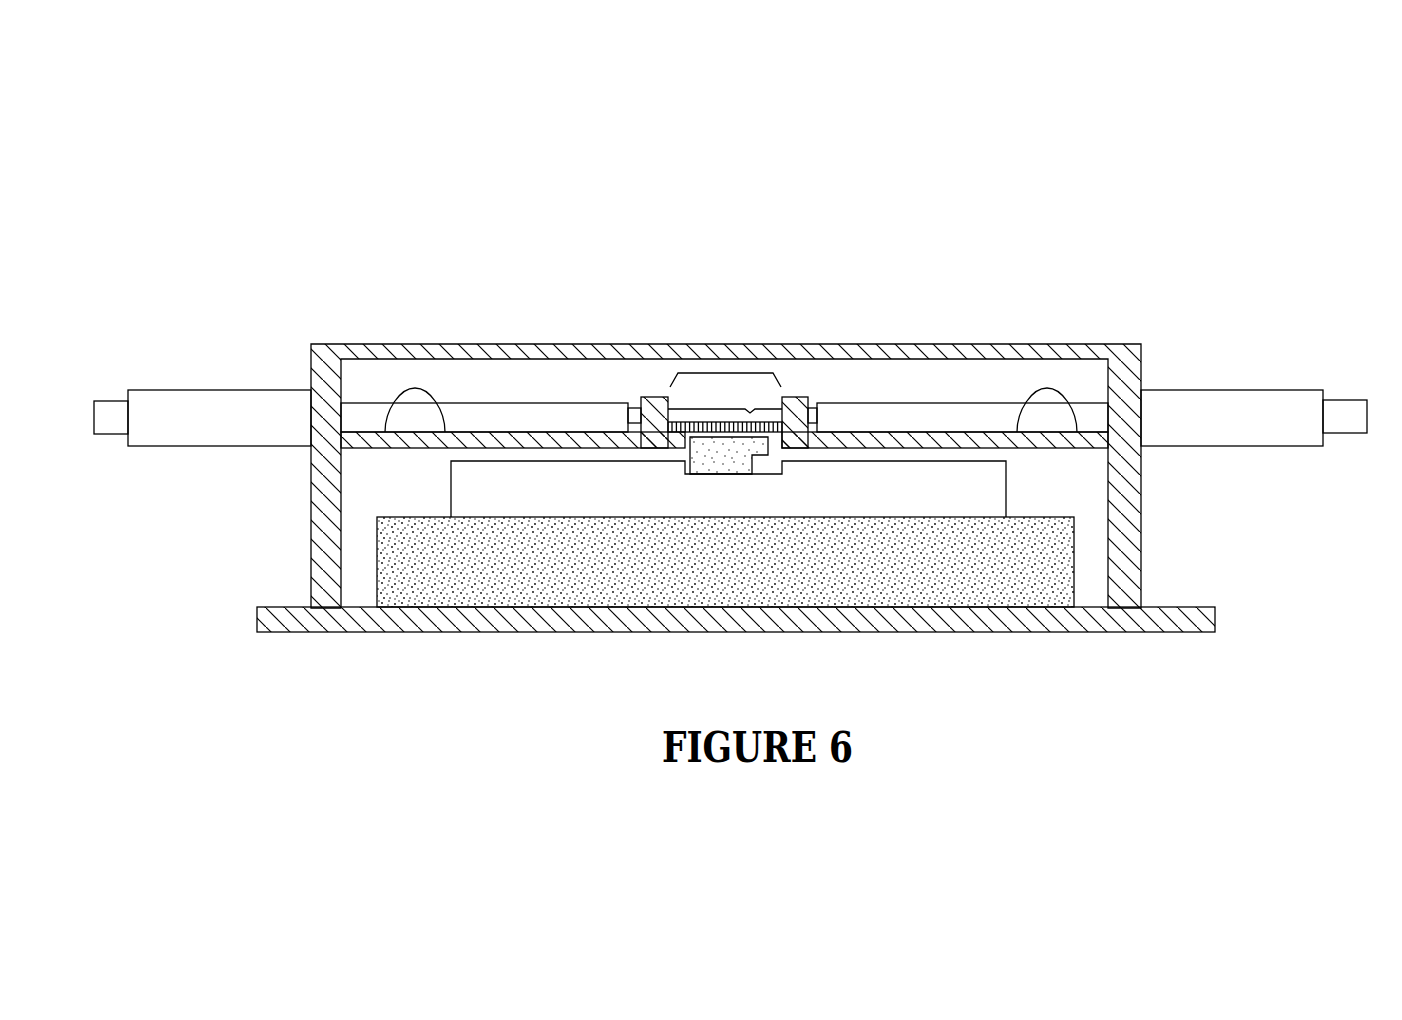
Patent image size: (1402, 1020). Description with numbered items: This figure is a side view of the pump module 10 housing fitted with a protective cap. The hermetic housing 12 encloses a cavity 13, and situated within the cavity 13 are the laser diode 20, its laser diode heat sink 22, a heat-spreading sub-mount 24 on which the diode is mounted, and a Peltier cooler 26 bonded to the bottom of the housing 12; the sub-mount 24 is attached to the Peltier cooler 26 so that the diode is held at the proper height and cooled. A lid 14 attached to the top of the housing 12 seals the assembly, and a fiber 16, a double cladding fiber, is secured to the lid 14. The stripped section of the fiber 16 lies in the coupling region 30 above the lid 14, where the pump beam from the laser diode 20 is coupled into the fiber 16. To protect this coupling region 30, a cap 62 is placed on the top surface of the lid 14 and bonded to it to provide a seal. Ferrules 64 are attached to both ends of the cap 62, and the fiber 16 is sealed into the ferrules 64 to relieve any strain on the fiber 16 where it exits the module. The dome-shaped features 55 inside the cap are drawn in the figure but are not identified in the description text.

The pump module 10 is at (136, 236).
The housing 12 is at (1130, 503).
The cavity 13 is at (350, 503).
The lid 14 is at (485, 440).
The fiber 16 is at (105, 397).
The laser diode 20 is at (762, 444).
The laser diode heat sink 22 is at (710, 462).
The heat-spreading sub-mount 24 is at (970, 483).
The Peltier cooler 26 is at (420, 585).
The coupling region 30 is at (726, 373).
The detent bumps 55 is at (428, 400).
The cap 62 is at (348, 344).
The ferrules 64 is at (217, 388).